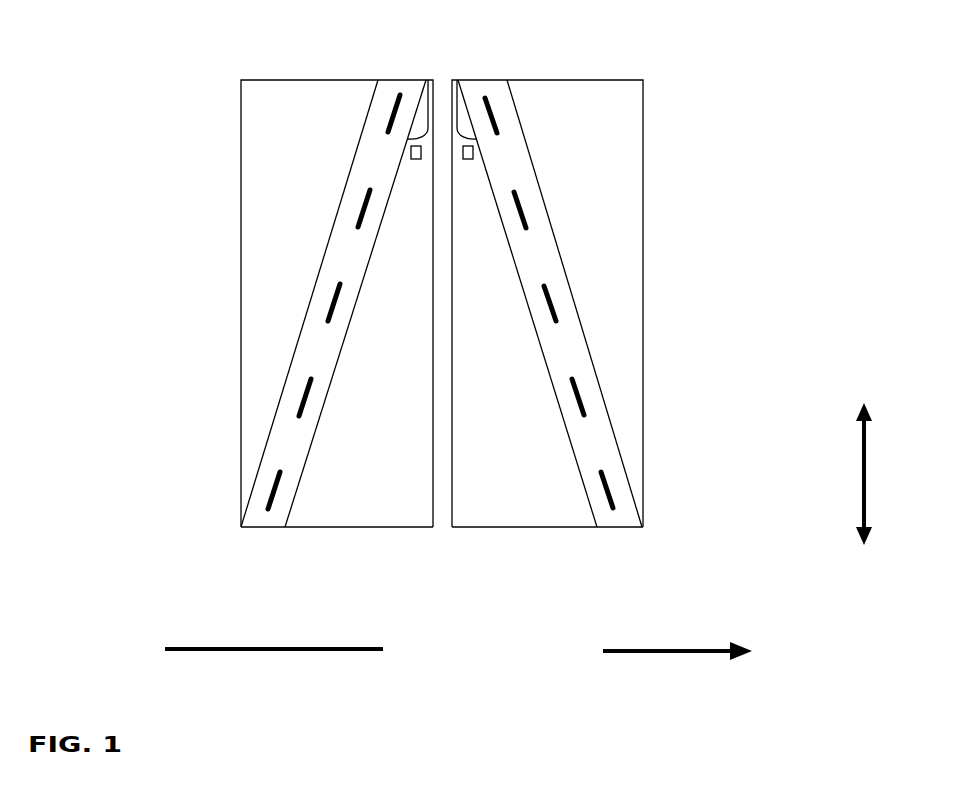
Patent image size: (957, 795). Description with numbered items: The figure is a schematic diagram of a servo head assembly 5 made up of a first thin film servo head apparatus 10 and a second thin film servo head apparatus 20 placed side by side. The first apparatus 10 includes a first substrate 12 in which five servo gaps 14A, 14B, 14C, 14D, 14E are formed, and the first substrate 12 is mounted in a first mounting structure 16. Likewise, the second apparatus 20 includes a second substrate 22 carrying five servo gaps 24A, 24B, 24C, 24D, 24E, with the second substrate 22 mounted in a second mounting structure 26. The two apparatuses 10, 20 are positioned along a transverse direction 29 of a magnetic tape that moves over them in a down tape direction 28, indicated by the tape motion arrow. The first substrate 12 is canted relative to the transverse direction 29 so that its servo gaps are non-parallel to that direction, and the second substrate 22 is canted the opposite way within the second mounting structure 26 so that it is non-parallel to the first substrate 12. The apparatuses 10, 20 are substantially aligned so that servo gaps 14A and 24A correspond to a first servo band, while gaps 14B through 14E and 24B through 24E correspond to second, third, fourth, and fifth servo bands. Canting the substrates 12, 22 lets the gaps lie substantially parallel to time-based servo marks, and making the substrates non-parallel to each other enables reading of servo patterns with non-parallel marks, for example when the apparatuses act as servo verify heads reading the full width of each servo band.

The servo head assembly 5 is at (95, 98).
The first thin film servo head apparatus 10 is at (342, 133).
The first substrate 12 is at (305, 367).
The servo gap 14A is at (387, 115).
The servo gap 14B is at (355, 207).
The servo gap 14C is at (327, 295).
The servo gap 14D is at (293, 402).
The servo gap 14E is at (265, 492).
The first mounting structure 16 is at (385, 510).
The second thin film servo head apparatus 20 is at (543, 133).
The second substrate 22 is at (577, 367).
The servo gap 24A is at (498, 115).
The servo gap 24B is at (525, 205).
The servo gap 24C is at (552, 295).
The servo gap 24D is at (590, 402).
The servo gap 24E is at (617, 492).
The second mounting structure 26 is at (532, 510).
The down tape direction 28 is at (660, 653).
The transverse direction 29 is at (865, 483).